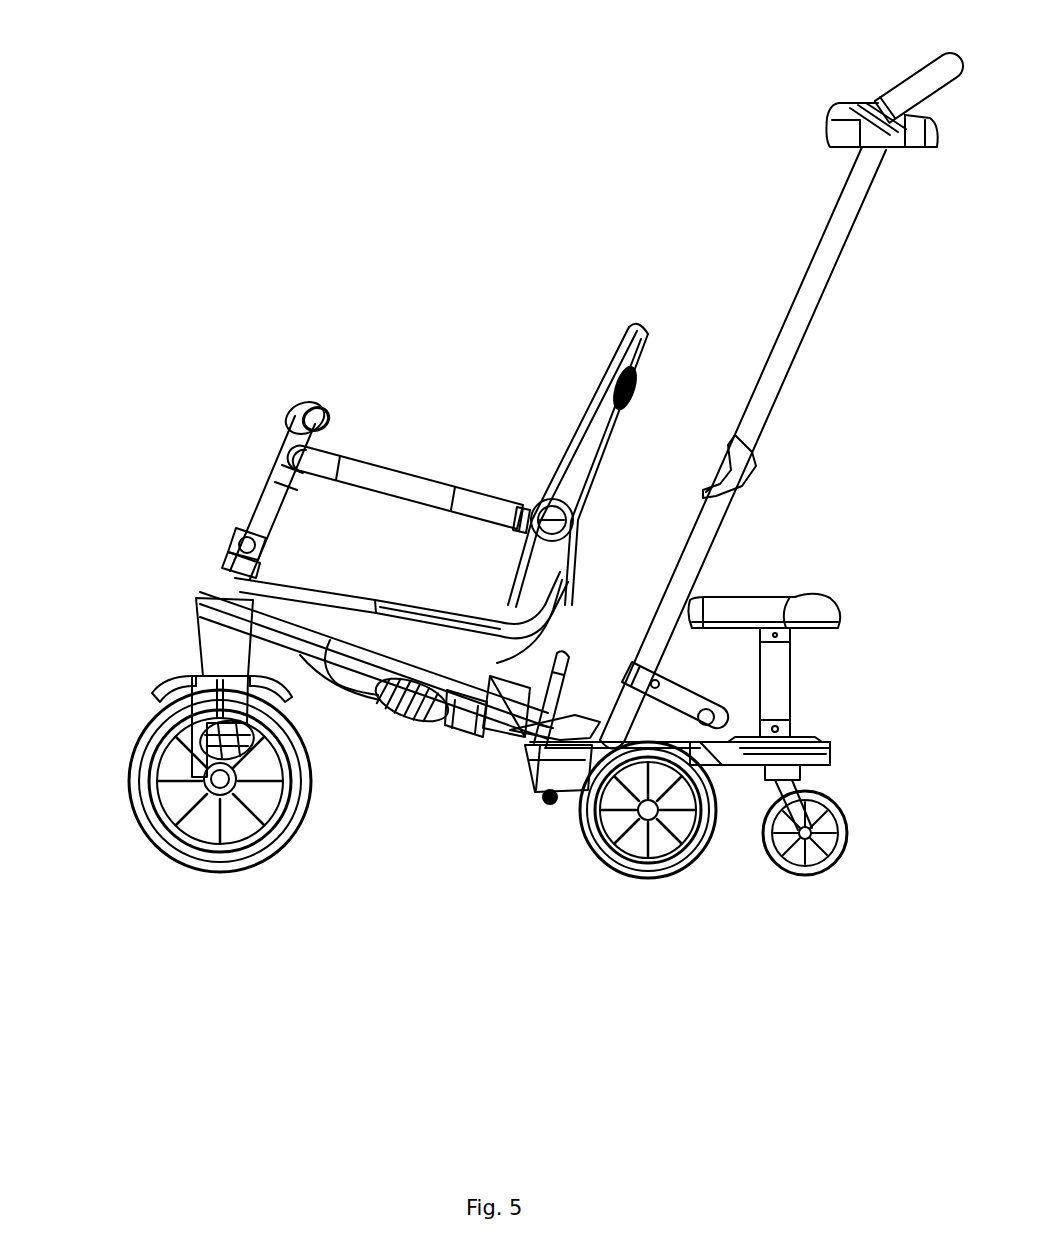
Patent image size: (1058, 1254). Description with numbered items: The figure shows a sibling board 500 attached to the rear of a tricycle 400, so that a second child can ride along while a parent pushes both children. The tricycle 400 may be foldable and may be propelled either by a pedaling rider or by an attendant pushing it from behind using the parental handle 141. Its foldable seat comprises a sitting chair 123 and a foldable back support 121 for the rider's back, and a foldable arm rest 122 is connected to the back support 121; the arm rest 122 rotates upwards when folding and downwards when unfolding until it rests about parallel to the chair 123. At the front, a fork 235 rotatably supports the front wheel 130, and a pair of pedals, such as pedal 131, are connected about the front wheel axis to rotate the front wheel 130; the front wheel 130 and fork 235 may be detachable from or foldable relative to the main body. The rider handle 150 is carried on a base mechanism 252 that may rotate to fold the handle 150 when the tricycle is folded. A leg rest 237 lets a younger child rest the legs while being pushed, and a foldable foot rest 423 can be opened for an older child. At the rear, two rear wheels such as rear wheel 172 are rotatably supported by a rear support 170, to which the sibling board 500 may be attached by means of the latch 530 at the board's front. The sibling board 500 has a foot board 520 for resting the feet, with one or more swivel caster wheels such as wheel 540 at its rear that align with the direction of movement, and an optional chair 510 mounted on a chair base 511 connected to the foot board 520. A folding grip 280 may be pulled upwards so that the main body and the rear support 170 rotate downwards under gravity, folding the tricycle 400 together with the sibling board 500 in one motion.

The tricycle 400 is at (262, 238).
The parental handle 141 is at (787, 337).
The foldable back support 121 is at (565, 462).
The foldable arm rest 122 is at (418, 490).
The rider handle 150 is at (283, 405).
The base mechanism 252 is at (240, 537).
The leg rest 237 is at (195, 605).
The fork 235 is at (205, 697).
The front wheel 130 is at (135, 827).
The pedal 131 is at (243, 781).
The sitting chair 123 is at (427, 637).
The foot rest 423 is at (380, 712).
The folding grip 280 is at (566, 680).
The latch 530 is at (525, 783).
The rear support 170 is at (563, 768).
The rear wheel 172 is at (702, 840).
The sibling board 500 is at (845, 575).
The chair 510 is at (805, 603).
The chair base 511 is at (778, 660).
The foot board 520 is at (807, 748).
The wheel 540 is at (835, 848).